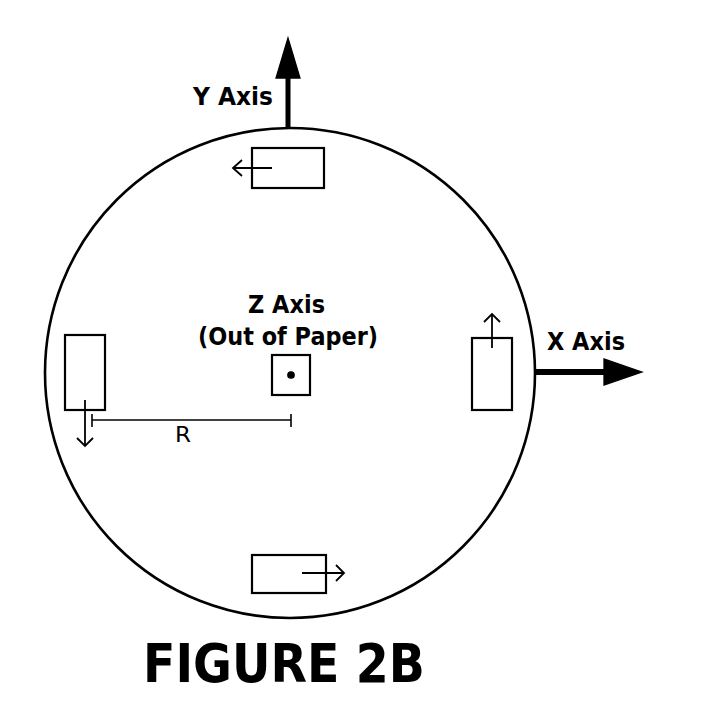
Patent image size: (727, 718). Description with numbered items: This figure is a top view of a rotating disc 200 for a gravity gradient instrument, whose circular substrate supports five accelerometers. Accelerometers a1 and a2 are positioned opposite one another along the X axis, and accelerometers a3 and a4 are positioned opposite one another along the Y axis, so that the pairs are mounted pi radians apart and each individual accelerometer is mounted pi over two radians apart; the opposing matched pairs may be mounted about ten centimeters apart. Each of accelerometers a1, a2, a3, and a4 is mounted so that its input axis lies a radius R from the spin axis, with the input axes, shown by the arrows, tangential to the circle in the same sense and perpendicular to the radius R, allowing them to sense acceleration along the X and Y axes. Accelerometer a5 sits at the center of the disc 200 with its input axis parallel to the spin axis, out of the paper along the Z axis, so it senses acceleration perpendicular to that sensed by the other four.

The rotating disc 200 is at (142, 192).
The accelerometer a1 is at (492, 362).
The accelerometer a2 is at (85, 390).
The accelerometer a3 is at (278, 168).
The accelerometer a4 is at (298, 574).
The accelerometer a5 is at (307, 375).